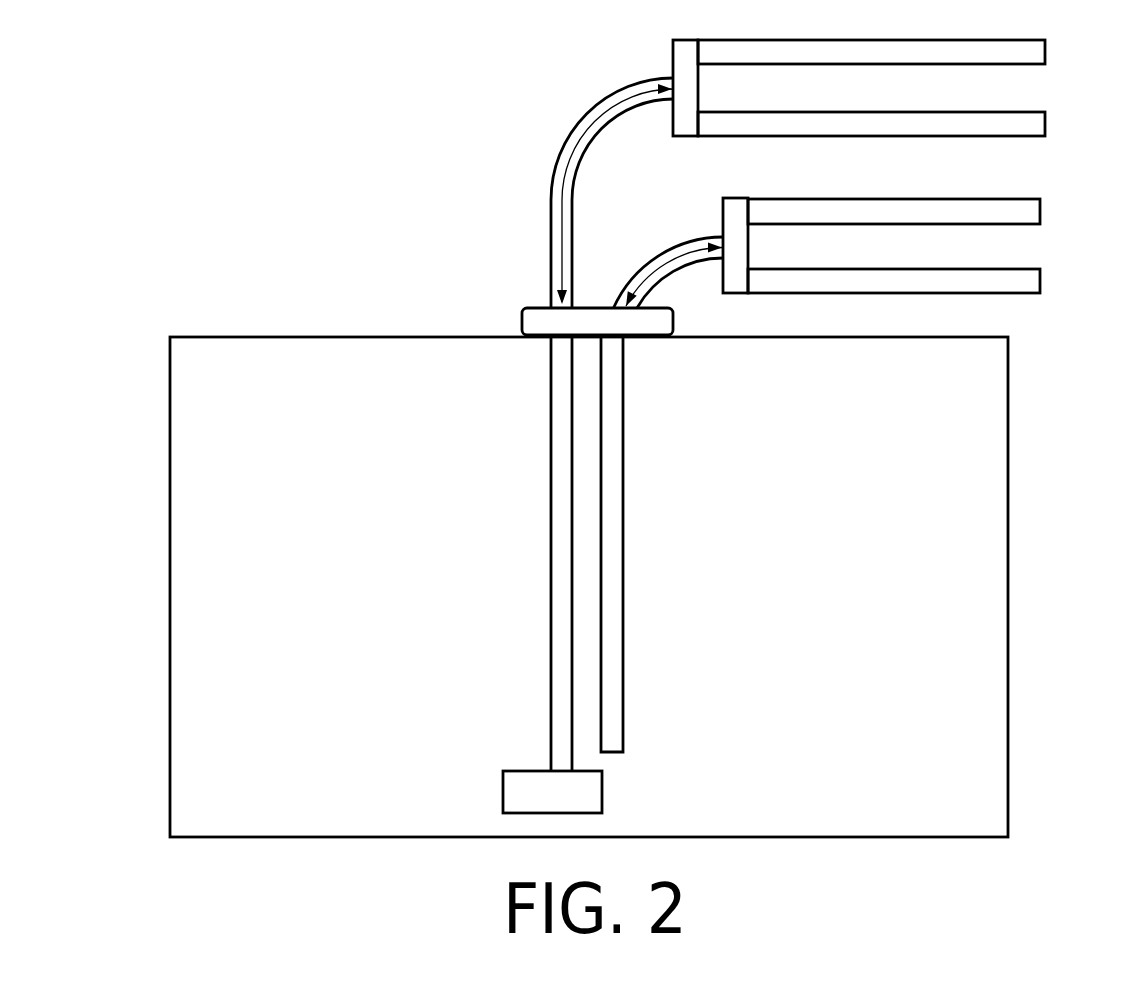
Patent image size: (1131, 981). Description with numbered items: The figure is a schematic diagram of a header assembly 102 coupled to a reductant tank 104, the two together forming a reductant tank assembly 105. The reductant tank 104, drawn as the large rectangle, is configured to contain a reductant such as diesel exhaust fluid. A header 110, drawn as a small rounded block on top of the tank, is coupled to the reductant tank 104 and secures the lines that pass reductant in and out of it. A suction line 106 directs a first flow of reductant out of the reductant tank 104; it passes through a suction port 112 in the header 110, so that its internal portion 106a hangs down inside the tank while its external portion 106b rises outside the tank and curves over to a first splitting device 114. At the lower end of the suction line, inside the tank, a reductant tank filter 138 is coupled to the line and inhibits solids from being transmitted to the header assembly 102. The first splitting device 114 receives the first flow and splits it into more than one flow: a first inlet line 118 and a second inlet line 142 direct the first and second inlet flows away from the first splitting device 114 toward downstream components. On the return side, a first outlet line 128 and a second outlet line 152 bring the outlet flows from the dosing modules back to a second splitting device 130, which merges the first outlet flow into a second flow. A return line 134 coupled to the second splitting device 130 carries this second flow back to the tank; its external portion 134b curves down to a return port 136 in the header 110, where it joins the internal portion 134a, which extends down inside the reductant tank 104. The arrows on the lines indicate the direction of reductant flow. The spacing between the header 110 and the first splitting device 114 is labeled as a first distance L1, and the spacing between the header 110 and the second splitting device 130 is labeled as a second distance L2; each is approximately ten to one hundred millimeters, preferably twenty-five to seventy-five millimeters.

The header assembly 102 is at (430, 178).
The reductant tank 104 is at (170, 438).
The reductant tank assembly 105 is at (129, 258).
The suction line 106 is at (551, 175).
The internal portion of the suction line 106a is at (549, 405).
The external portion of the suction line 106b is at (598, 103).
The header 110 is at (522, 321).
The suction port 112 is at (550, 307).
The first splitting device 114 is at (685, 80).
The first inlet line 118 is at (1045, 53).
The first outlet line 128 is at (1040, 283).
The second splitting device 130 is at (738, 242).
The return line 134 is at (692, 239).
The internal portion of the return line 134a is at (625, 405).
The external portion of the return line 134b is at (673, 245).
The return port 136 is at (616, 307).
The reductant tank filter 138 is at (503, 790).
The second inlet line 142 is at (1045, 125).
The second outlet line 152 is at (1040, 212).
The first distance L1 is at (592, 124).
The second distance L2 is at (658, 260).